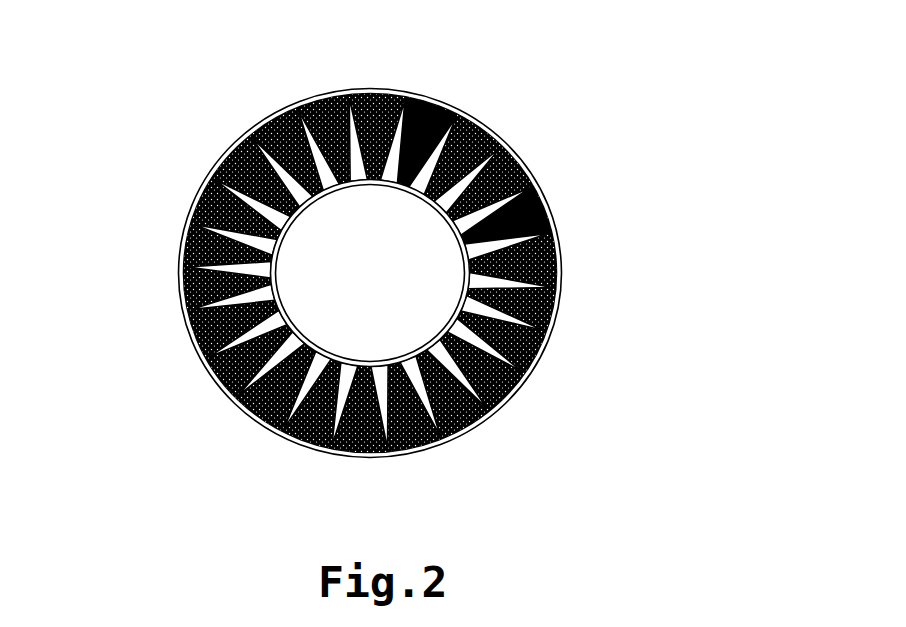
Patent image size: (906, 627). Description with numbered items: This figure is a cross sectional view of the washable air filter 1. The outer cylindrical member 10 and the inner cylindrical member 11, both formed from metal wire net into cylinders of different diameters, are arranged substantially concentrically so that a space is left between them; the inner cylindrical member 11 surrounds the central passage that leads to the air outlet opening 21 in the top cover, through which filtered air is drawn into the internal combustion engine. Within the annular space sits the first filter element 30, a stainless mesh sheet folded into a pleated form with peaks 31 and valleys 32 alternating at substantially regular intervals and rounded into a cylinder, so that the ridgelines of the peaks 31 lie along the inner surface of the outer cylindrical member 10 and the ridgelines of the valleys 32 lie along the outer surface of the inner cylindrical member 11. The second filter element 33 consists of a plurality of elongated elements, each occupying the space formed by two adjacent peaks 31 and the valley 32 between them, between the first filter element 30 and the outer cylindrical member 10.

The washable air filter 1 is at (594, 93).
The outer cylindrical member 10 is at (522, 172).
The inner cylindrical member 11 is at (318, 235).
The air outlet opening 21 is at (208, 183).
The first filter element 30 is at (182, 281).
The peaks 31 is at (553, 285).
The valleys 32 is at (546, 210).
The second filter element 33 is at (424, 108).